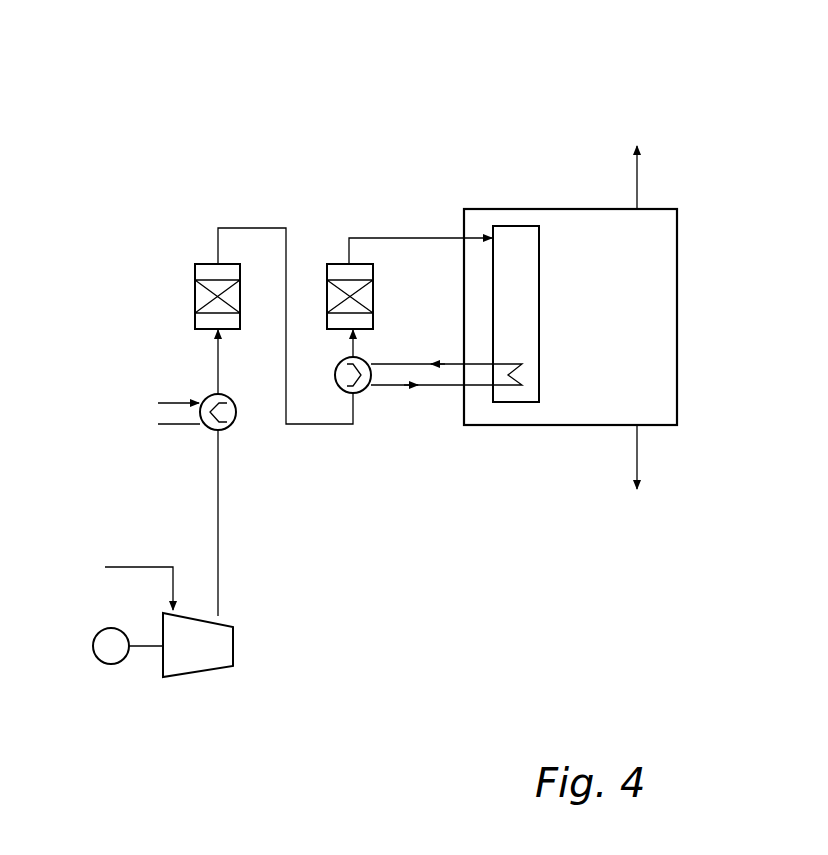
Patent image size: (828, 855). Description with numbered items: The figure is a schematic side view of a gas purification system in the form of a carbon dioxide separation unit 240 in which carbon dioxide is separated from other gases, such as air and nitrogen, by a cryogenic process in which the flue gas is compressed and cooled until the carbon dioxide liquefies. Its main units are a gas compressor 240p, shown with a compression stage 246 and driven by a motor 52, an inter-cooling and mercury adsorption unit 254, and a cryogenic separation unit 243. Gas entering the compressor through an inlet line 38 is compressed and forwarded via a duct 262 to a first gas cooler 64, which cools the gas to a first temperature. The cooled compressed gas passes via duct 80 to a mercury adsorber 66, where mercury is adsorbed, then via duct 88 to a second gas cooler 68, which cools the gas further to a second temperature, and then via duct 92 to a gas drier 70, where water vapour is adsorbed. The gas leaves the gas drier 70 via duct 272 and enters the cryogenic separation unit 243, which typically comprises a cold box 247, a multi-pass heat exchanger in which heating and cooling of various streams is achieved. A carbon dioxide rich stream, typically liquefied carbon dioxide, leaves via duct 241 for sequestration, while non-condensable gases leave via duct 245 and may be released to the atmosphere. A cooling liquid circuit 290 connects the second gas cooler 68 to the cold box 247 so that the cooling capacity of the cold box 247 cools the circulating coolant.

The carbon dioxide separation unit 240 is at (479, 69).
The gas compressor 240p is at (134, 601).
The cryogenic separation unit 243 is at (525, 200).
The duct 245 is at (636, 187).
The cold box 247 is at (510, 225).
The duct 241 is at (636, 448).
The duct 272 is at (408, 237).
The cooling liquid circuit 290 is at (440, 390).
The mercury adsorber 66 is at (194, 275).
The gas drier 70 is at (344, 263).
The duct 88 is at (255, 227).
The inter-cooling and mercury adsorption unit 254 is at (182, 213).
The second gas cooler 68 is at (362, 391).
The duct 92 is at (349, 353).
The first gas cooler 64 is at (210, 400).
The duct 80 is at (220, 365).
The duct 262 is at (220, 478).
The compression stage 246 is at (195, 676).
The motor 52 is at (110, 665).
The air inlet 38 is at (125, 566).